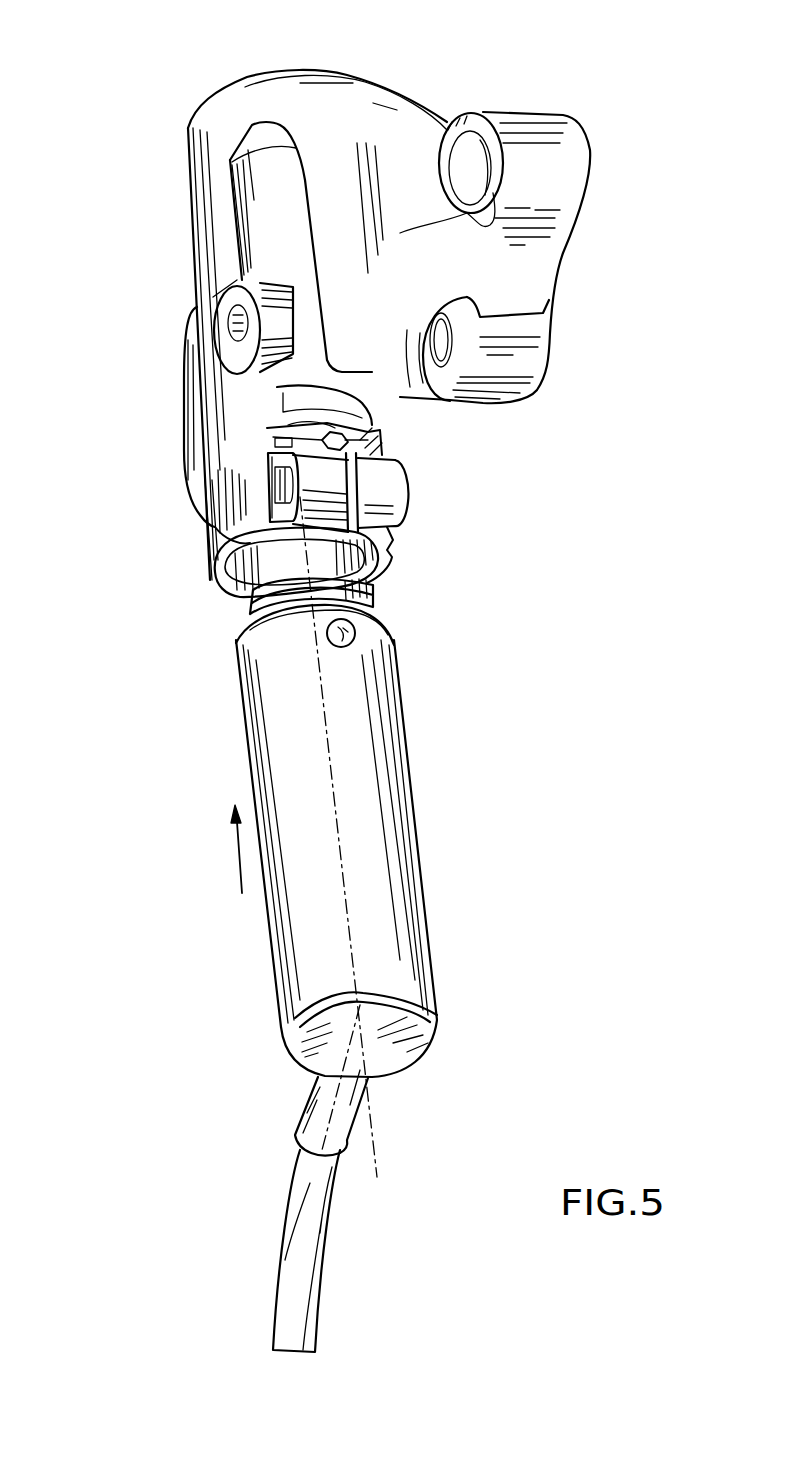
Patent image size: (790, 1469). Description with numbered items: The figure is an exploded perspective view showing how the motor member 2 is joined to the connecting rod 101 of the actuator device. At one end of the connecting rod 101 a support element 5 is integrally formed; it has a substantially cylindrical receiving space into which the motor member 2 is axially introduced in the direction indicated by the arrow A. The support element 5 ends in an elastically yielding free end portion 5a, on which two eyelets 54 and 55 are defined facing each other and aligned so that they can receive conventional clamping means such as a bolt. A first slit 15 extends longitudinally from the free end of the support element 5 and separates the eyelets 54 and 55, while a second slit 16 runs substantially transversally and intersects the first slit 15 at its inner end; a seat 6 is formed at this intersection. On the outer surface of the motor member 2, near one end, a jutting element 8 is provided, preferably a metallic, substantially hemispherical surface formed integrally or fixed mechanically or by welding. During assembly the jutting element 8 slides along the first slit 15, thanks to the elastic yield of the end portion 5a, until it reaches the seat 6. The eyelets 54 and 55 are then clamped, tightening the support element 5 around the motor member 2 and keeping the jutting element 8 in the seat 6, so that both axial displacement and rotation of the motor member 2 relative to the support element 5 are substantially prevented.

The connecting rod 101 is at (198, 118).
The support element 5 is at (240, 393).
The elastically yielding free end portion 5a is at (165, 566).
The second slit 16 is at (275, 430).
The seat 6 is at (212, 452).
The first slit 15 is at (406, 478).
The eyelet 54 is at (392, 532).
The eyelet 55 is at (322, 497).
The jutting element 8 is at (355, 636).
The motor member 2 is at (370, 843).
The arrow A is at (240, 855).